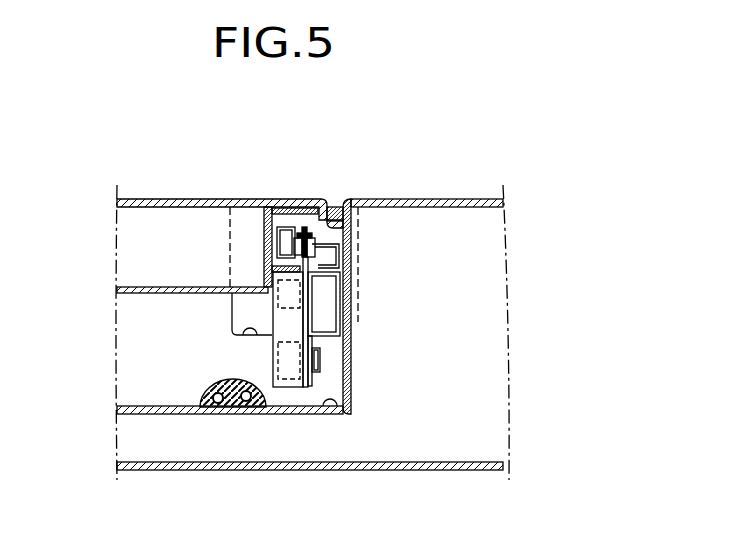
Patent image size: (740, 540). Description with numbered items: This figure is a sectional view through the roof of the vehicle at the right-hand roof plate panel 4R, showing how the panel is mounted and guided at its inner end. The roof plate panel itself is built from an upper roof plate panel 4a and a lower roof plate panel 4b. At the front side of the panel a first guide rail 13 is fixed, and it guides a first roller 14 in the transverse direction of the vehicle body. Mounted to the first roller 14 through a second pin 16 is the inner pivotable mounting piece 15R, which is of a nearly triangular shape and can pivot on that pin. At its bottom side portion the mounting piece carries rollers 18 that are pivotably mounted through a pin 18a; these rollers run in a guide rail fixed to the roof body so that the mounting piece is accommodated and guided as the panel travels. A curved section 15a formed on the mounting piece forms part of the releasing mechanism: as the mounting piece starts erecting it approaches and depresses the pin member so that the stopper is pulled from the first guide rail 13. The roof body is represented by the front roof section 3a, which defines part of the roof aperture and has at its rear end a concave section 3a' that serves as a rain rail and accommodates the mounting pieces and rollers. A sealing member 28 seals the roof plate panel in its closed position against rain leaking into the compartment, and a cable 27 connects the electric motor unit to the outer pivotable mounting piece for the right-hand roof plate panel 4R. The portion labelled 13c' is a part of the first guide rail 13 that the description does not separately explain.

The right-hand roof plate panel 4R is at (201, 190).
The upper roof plate panel 4a is at (217, 199).
The lower roof plate panel 4b is at (143, 287).
The front roof section 3a is at (313, 309).
The concave section 3a' is at (310, 469).
The sealing member 28 is at (335, 204).
The first guide rail 13 is at (281, 226).
The first roller 14 is at (280, 248).
The second pin 16 is at (303, 232).
The inner pivotable mounting piece for the right-hand roof plate panel 15R is at (321, 267).
The curved section 15a is at (350, 306).
The pin 18a is at (324, 363).
The roller 18 is at (278, 298).
The bent portion of bracket 13c' is at (237, 336).
The cable 27 is at (243, 407).